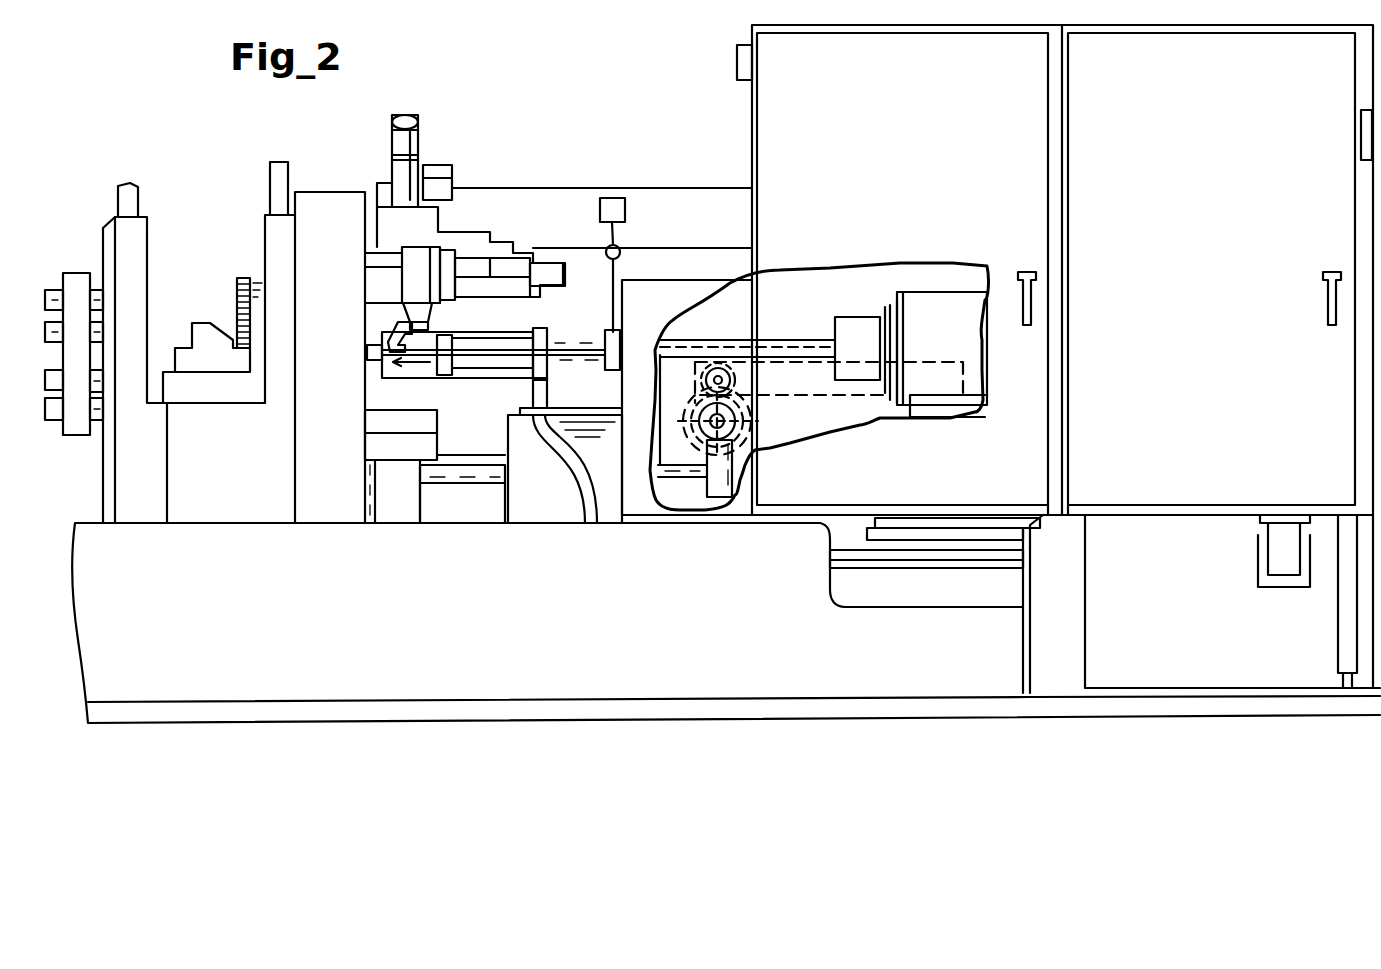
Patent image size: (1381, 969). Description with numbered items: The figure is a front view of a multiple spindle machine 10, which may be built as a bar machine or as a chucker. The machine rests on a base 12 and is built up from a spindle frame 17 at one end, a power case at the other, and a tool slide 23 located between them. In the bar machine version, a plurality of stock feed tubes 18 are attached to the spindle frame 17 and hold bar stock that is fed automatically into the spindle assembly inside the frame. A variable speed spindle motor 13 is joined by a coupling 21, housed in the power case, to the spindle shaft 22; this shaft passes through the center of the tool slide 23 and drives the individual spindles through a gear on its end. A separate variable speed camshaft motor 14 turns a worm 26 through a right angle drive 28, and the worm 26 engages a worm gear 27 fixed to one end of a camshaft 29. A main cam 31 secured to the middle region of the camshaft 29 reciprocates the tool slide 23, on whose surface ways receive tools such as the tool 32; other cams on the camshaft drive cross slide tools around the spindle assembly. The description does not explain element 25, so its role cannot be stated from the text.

The multiple spindle machine 10 is at (598, 180).
The base 12 is at (105, 710).
The variable speed spindle motor 13 is at (948, 308).
The variable speed camshaft motor 14 is at (853, 393).
The spindle frame 17 is at (135, 228).
The stock feed tubes 18 is at (58, 322).
The coupling 21 is at (852, 335).
The spindle shaft 22 is at (787, 347).
The tool slide 23 is at (500, 337).
The gear 25 is at (240, 283).
The worm 26 is at (752, 421).
The worm gear 27 is at (752, 452).
The right angle drive 28 is at (680, 420).
The camshaft 29 is at (685, 473).
The main cam 31 is at (553, 505).
The tool 32 is at (425, 365).